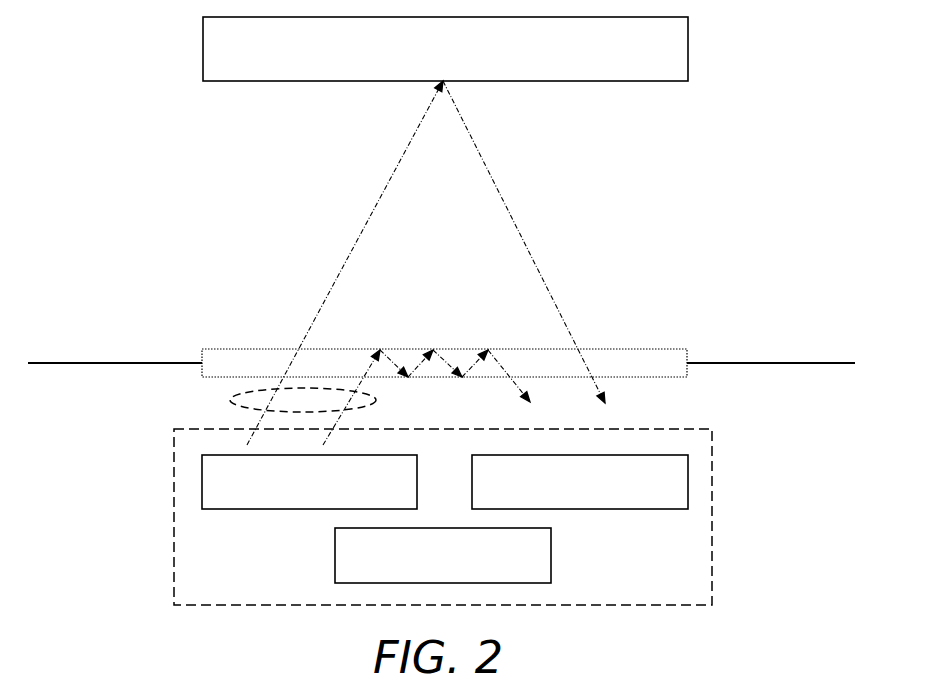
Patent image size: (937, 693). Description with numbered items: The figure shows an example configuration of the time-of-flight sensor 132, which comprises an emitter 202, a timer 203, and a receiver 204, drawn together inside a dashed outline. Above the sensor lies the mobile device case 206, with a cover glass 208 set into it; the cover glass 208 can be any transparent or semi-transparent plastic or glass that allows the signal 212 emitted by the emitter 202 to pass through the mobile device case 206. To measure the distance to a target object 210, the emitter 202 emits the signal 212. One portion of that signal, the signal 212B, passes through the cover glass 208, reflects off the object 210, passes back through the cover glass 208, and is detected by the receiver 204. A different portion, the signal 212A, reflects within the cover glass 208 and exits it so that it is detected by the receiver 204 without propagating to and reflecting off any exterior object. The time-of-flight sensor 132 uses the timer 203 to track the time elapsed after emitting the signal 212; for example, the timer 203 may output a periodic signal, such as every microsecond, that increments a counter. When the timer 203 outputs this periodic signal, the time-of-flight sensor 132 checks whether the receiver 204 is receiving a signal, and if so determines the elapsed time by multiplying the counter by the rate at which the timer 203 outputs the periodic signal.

The object 210 is at (491, 61).
The signal 212B is at (368, 222).
The signal 212A is at (513, 401).
The mobile device case 206 is at (115, 362).
The cover glass 208 is at (653, 349).
The signal 212 is at (233, 402).
The time-of-flight sensor 132 is at (713, 483).
The emitter 202 is at (360, 494).
The receiver 204 is at (637, 494).
The timer 203 is at (487, 567).